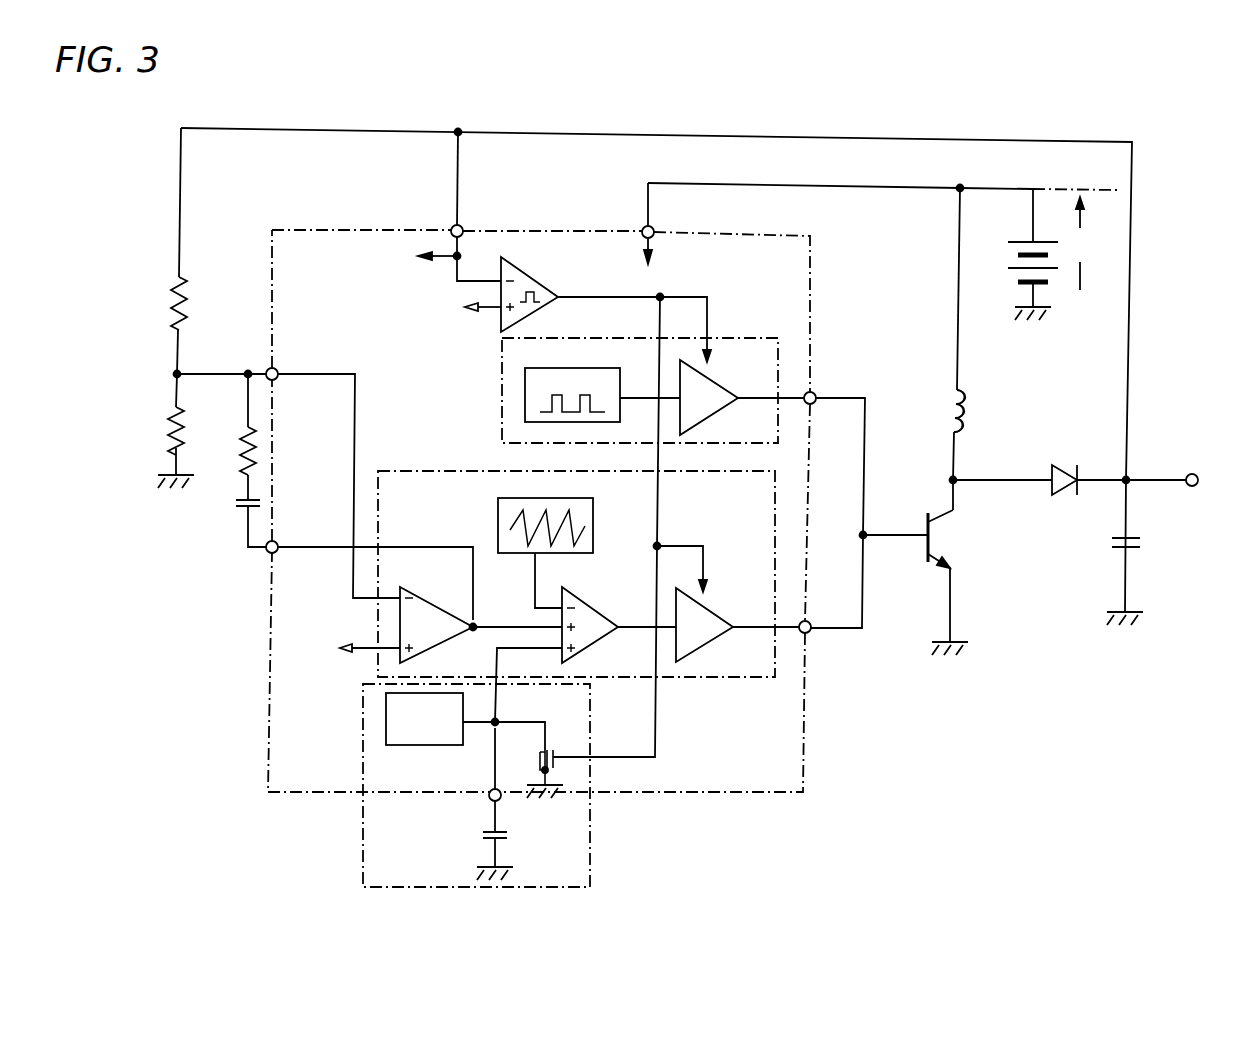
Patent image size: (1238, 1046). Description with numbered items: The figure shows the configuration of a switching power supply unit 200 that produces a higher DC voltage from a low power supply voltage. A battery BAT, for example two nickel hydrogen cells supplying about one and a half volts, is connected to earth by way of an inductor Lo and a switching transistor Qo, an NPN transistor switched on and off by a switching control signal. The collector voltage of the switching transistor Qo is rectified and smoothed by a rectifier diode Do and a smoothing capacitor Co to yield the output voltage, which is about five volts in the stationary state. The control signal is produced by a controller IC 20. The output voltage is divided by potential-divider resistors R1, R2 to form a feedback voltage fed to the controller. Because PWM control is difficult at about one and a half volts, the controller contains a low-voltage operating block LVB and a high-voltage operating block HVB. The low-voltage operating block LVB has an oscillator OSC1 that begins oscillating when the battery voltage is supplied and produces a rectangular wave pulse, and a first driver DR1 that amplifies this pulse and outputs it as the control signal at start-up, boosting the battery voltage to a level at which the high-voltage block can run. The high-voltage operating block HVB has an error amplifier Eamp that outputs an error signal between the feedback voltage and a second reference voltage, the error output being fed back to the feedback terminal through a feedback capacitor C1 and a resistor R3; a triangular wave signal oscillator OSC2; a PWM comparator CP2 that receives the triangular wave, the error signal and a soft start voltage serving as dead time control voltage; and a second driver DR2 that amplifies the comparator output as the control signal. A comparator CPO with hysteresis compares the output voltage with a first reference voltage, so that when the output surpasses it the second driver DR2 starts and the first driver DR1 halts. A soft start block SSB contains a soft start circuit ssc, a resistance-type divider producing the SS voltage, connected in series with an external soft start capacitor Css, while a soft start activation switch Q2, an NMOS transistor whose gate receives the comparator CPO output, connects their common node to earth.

The switching power supply unit 200 is at (851, 119).
The controller IC 20 is at (812, 266).
The potential-divider resistor R1 is at (161, 303).
The potential-divider resistor R2 is at (158, 431).
The resistor R3 is at (232, 451).
The feedback capacitor C1 is at (234, 502).
The comparator CPO is at (547, 294).
The low-voltage operating block LVB is at (500, 384).
The oscillator OSC1 is at (542, 368).
The first driver DR1 is at (722, 397).
The high-voltage operating block HVB is at (440, 471).
The triangular wave signal oscillator OSC2 is at (498, 520).
The error amplifier Eamp is at (439, 618).
The PWM comparator CP2 is at (600, 623).
The second driver DR2 is at (718, 625).
The soft start block SSB is at (363, 747).
The soft start circuit ssc is at (420, 745).
The soft start activation switch Q2 is at (555, 759).
The soft start capacitor Css is at (516, 837).
The battery BAT is at (1012, 254).
The inductor Lo is at (978, 411).
The switching transistor Qo is at (949, 582).
The rectifier diode Do is at (1068, 466).
The smoothing capacitor Co is at (1108, 542).